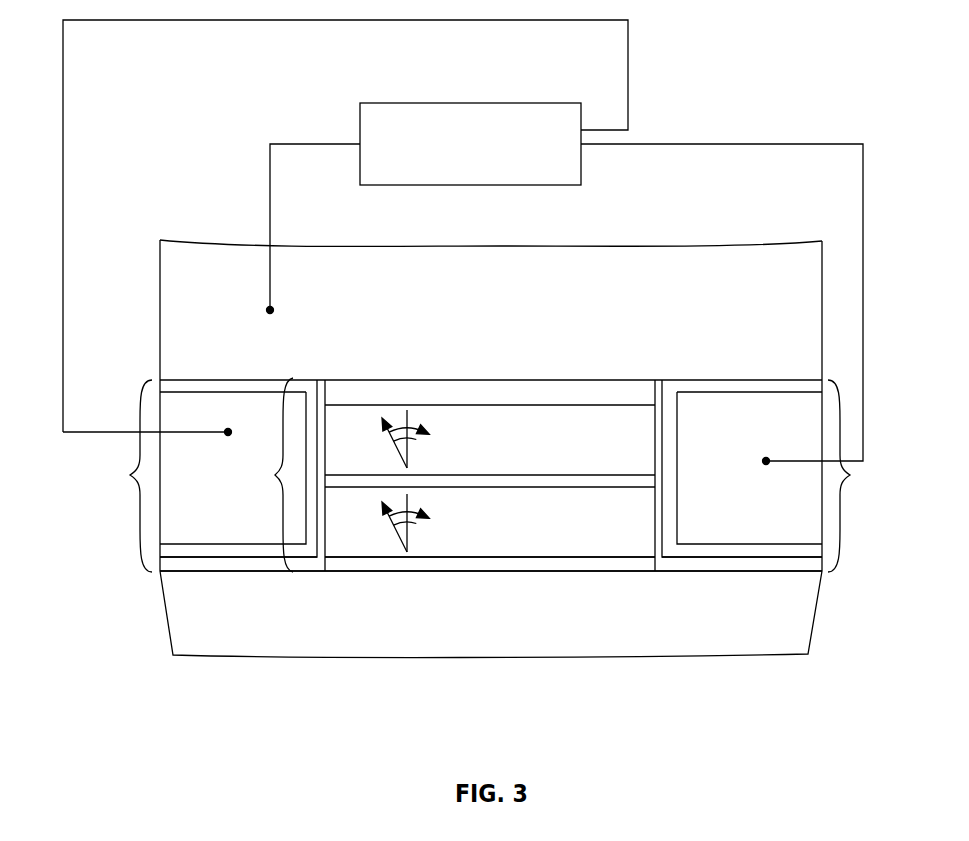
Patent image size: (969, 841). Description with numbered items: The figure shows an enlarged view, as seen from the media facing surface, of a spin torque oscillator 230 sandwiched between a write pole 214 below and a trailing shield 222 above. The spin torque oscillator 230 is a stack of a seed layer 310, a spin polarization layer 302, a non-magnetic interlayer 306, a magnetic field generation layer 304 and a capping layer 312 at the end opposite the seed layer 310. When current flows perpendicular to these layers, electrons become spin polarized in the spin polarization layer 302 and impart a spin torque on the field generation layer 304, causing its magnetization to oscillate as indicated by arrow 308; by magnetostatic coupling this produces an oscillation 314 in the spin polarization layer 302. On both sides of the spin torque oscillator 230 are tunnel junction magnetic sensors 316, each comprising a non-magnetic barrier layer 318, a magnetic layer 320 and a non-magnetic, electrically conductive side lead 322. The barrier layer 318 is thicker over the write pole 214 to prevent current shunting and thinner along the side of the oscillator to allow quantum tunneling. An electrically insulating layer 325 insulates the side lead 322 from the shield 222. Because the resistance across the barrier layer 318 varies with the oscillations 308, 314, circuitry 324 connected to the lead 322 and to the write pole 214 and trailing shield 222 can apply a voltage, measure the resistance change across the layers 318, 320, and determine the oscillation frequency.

The circuitry 324 is at (448, 103).
The trailing shield 222 is at (528, 308).
The write pole 214 is at (534, 614).
The capping layer 312 is at (529, 394).
The magnetic field generation layer 304 is at (529, 442).
The non-magnetic interlayer 306 is at (553, 480).
The spin polarization layer 302 is at (534, 526).
The seed layer 310 is at (573, 563).
The magnetic oscillation of the field generation layer 308 is at (396, 446).
The oscillation in the spin polarization layer 314 is at (396, 530).
The electrically insulating layer 325 is at (243, 385).
The side lead 322 is at (230, 461).
The magnetic layer 320 is at (238, 552).
The non-magnetic barrier layer 318 is at (253, 565).
The spin torque oscillator 230 is at (284, 516).
The tunnel junction magnetic sensor 316 is at (140, 382).